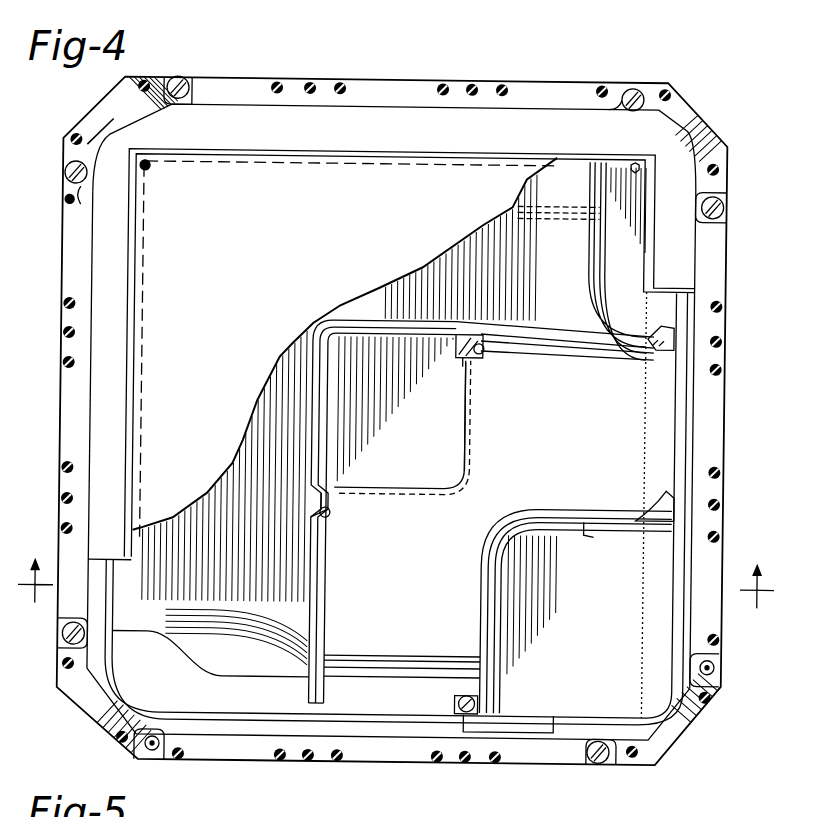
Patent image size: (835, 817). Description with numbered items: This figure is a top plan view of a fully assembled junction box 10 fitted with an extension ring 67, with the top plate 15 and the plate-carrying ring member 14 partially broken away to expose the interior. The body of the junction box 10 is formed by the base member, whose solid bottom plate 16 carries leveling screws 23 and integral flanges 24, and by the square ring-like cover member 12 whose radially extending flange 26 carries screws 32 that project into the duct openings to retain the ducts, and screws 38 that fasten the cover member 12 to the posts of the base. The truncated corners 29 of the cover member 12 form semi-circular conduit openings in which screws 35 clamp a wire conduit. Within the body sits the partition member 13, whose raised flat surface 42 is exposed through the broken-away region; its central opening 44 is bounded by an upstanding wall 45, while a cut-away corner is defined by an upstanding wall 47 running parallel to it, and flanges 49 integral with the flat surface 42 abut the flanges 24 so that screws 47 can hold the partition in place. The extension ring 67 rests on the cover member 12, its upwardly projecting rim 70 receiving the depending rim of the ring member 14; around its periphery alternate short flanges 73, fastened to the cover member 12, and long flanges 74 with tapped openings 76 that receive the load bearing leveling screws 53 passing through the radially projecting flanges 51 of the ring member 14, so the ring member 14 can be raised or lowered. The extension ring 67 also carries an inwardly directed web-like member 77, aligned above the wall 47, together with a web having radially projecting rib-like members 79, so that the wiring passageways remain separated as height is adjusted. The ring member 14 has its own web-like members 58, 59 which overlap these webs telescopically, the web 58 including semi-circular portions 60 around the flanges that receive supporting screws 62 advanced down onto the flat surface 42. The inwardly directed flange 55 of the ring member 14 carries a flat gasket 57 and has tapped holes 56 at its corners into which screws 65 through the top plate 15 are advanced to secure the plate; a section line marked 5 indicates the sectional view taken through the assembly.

The junction box 10 is at (745, 152).
The cover member 12 is at (718, 426).
The partition member 13 is at (545, 421).
The ring member 14 is at (353, 110).
The top or cover plate 15 is at (268, 271).
The bottom plate 16 is at (440, 417).
The leveling screws 23 is at (145, 83).
The flanges 24 is at (466, 724).
The radially extending flange 26 is at (66, 241).
The truncated corners 29 is at (88, 116).
The screws 32 is at (438, 83).
The screws 35 is at (66, 142).
The screws 38 is at (472, 83).
The raised flat surface 42 is at (478, 250).
The central opening 44 is at (470, 447).
The upstanding wall 45 is at (672, 330).
The upstanding wall 47 is at (650, 500).
The flanges 49 is at (470, 684).
The radially projecting flanges 51 is at (63, 200).
The leveling screws 53 is at (60, 174).
The inwardly directed flange 55 is at (556, 156).
The tapped holes 56 is at (640, 168).
The flat gasket 57 is at (130, 556).
The web-like member 58 is at (598, 348).
The web-like member 59 is at (597, 538).
The semi-circular portions 60 is at (486, 354).
The supporting screws 62 is at (484, 342).
The screws 65 is at (150, 170).
The extension ring 67 is at (566, 722).
The upwardly projecting flange or rim 70 is at (675, 612).
The short flanges 73 is at (190, 83).
The long flanges 74 is at (168, 760).
The tapped openings 76 is at (156, 755).
The web-like member 77 is at (516, 521).
The rib-like members 79 is at (298, 499).
The section line 5- 5 is at (396, 591).